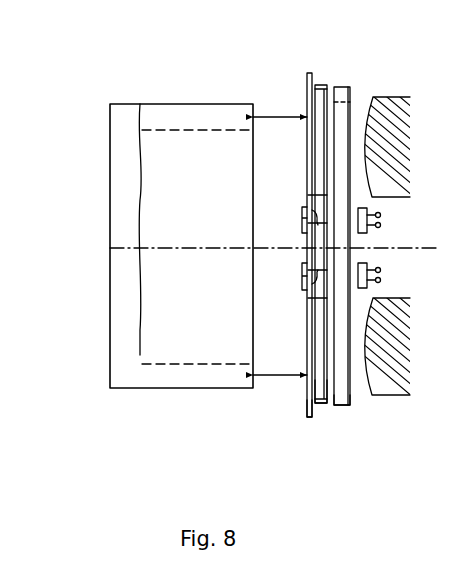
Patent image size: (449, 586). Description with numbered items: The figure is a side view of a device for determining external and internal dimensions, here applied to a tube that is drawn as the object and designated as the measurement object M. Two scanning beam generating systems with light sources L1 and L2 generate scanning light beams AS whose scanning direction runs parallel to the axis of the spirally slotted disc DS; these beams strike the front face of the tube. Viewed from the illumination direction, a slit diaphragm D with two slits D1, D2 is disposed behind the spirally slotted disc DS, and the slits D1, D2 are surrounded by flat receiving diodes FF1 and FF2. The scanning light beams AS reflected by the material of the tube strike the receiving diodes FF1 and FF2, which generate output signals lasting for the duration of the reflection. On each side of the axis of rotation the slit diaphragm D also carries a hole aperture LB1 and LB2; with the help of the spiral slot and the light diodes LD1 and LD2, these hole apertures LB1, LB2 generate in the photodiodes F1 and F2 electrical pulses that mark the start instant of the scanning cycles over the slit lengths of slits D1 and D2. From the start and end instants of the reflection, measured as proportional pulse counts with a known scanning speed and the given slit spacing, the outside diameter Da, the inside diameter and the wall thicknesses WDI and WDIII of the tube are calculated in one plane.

The element object is at (145, 357).
The measurement object M is at (165, 388).
The outside diameter Da is at (118, 388).
The slit D1 is at (187, 364).
The wall thickness WDI is at (187, 70).
The wall thickness WDIII is at (187, 388).
The scanning light beams AS is at (291, 115).
The flat receiving diode FF1 is at (309, 77).
The flat receiving diode FF2 is at (309, 417).
The slit D2 is at (319, 404).
The slit diaphragm D is at (336, 87).
The spirally slotted disc DS is at (344, 406).
The hole aperture LB1 is at (318, 213).
The hole aperture LB2 is at (318, 284).
The photodiode F1 is at (302, 220).
The photodiode F2 is at (302, 273).
The light diode LD1 is at (365, 233).
The light diode LD2 is at (365, 263).
The light source L1 is at (390, 97).
The light source L2 is at (389, 396).